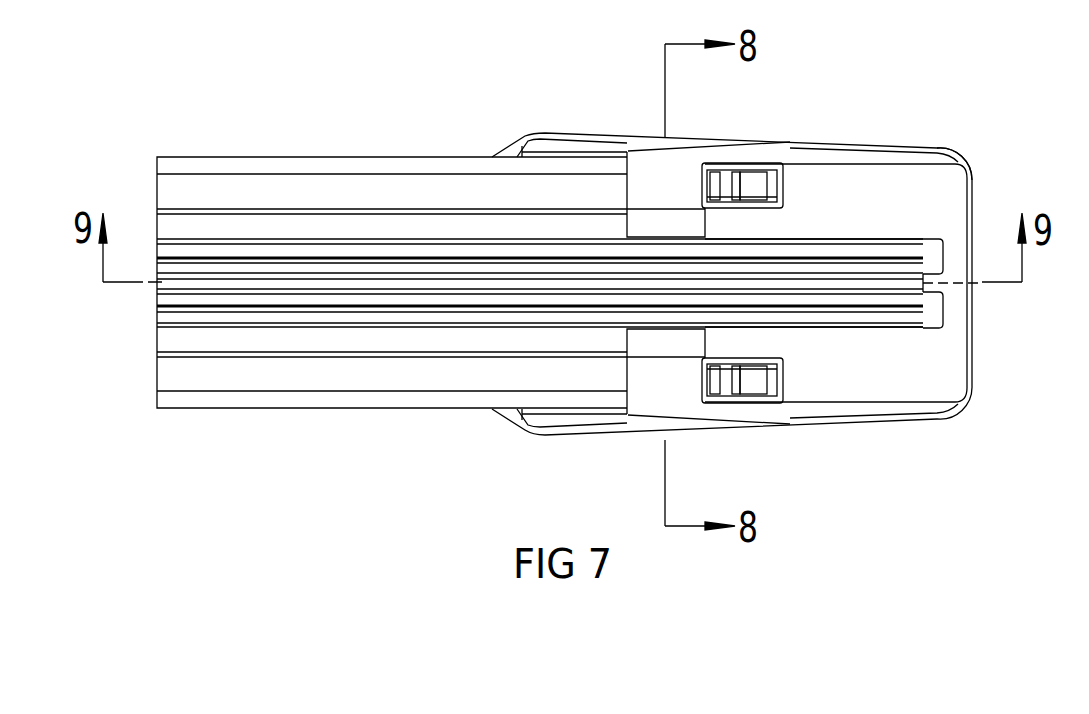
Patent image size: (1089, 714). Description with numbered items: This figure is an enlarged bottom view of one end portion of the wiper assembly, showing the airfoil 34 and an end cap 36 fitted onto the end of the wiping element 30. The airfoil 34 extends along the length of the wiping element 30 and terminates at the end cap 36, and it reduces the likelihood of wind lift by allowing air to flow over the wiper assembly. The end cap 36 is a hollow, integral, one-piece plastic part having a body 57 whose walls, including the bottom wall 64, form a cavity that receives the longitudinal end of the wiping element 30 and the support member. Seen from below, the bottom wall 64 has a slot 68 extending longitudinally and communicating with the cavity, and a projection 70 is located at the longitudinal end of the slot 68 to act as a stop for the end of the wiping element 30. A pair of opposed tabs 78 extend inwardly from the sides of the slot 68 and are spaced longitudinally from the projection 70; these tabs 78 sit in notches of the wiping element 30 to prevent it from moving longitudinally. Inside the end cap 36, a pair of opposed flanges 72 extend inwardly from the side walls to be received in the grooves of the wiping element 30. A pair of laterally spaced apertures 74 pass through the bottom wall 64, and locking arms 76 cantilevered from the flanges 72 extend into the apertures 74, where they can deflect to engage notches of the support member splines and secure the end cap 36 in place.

The wiping element 30 is at (935, 253).
The airfoil 34 is at (357, 152).
The end cap 36 is at (910, 140).
The body 57 is at (967, 165).
The bottom wall 64 is at (909, 392).
The slot 68 is at (937, 313).
The projection 70 is at (937, 283).
The flanges 72 is at (672, 215).
The apertures 74 is at (775, 190).
The locking arms 76 is at (753, 182).
The tabs 78 is at (847, 238).